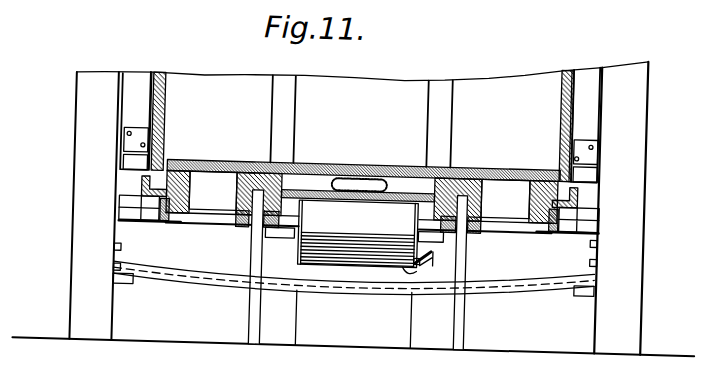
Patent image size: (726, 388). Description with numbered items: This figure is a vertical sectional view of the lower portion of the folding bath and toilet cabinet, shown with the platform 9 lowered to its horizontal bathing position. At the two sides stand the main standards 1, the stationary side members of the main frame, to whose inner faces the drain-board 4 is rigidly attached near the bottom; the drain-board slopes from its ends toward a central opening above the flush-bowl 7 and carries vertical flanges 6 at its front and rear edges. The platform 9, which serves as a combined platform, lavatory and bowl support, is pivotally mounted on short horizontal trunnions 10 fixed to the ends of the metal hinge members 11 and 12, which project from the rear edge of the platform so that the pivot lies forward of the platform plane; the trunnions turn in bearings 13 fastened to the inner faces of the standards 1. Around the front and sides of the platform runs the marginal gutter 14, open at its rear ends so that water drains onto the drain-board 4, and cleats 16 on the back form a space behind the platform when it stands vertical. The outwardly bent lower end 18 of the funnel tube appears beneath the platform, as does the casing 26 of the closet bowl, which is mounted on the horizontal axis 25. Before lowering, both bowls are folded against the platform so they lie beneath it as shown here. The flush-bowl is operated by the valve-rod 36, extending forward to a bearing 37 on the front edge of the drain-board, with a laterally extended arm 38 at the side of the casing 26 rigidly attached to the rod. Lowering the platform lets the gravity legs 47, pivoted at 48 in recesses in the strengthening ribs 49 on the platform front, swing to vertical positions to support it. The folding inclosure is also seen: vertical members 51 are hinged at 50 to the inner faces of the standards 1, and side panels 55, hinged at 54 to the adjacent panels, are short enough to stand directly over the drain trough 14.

The main standards 1 is at (82, 91).
The drain-board 4 is at (188, 290).
The vertical flanges 6 is at (293, 242).
The flush-bowl 7 is at (353, 318).
The platform 9 is at (368, 163).
The trunnions 10 is at (199, 225).
The hinge member 11 is at (159, 224).
The hinge member 12 is at (242, 231).
The bearings 13 is at (116, 202).
The marginal gutter 14 is at (141, 179).
The cleats 16 is at (293, 102).
The outwardly bent lower end of funnel tube 18 is at (350, 180).
The horizontal axis 25 is at (419, 196).
The casing 26 is at (358, 233).
The valve-rod 36 is at (427, 251).
The bearing 37 is at (413, 262).
The laterally extended arm 38 is at (435, 263).
The gravity legs 47 is at (259, 331).
The pivot of gravity legs 48 is at (235, 197).
The strengthening ribs 49 is at (210, 169).
The hinge 50 is at (119, 135).
The vertical members 51 is at (130, 86).
The hinge 54 is at (159, 114).
The panels 55 is at (159, 106).